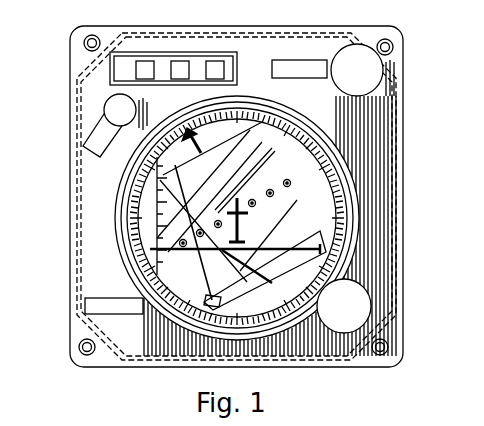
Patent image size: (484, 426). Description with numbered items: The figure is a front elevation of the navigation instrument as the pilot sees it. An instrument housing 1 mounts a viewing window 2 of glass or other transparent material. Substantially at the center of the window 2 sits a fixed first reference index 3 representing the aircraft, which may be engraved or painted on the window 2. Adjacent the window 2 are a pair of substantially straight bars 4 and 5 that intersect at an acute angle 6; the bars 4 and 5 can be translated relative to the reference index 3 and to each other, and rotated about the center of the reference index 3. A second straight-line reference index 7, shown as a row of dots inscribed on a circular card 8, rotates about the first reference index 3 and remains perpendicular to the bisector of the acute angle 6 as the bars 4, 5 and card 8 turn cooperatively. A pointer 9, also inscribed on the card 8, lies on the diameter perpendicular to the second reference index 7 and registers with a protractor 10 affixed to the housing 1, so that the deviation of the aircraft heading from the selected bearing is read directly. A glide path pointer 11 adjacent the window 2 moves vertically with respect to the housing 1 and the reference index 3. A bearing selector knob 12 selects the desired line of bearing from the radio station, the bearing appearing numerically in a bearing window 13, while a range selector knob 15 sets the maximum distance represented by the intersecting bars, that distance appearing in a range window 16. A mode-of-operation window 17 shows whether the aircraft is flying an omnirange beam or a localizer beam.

The instrument housing 1 is at (90, 198).
The viewing window 2 is at (320, 193).
The first reference index 3 is at (246, 193).
The straight bar 4 is at (187, 214).
The straight bar 5 is at (268, 280).
The acute angle 6 is at (217, 221).
The second straight-line reference index 7 is at (287, 179).
The circular card 8 is at (290, 209).
The pointer 9 is at (200, 134).
The protractor 10 is at (180, 114).
The glide path pointer 11 is at (146, 279).
The bearing selector knob 12 is at (372, 296).
The bearing window 13 is at (178, 54).
The range selector knob 15 is at (385, 90).
The range window 16 is at (284, 47).
The mode-of-operation window 17 is at (90, 312).